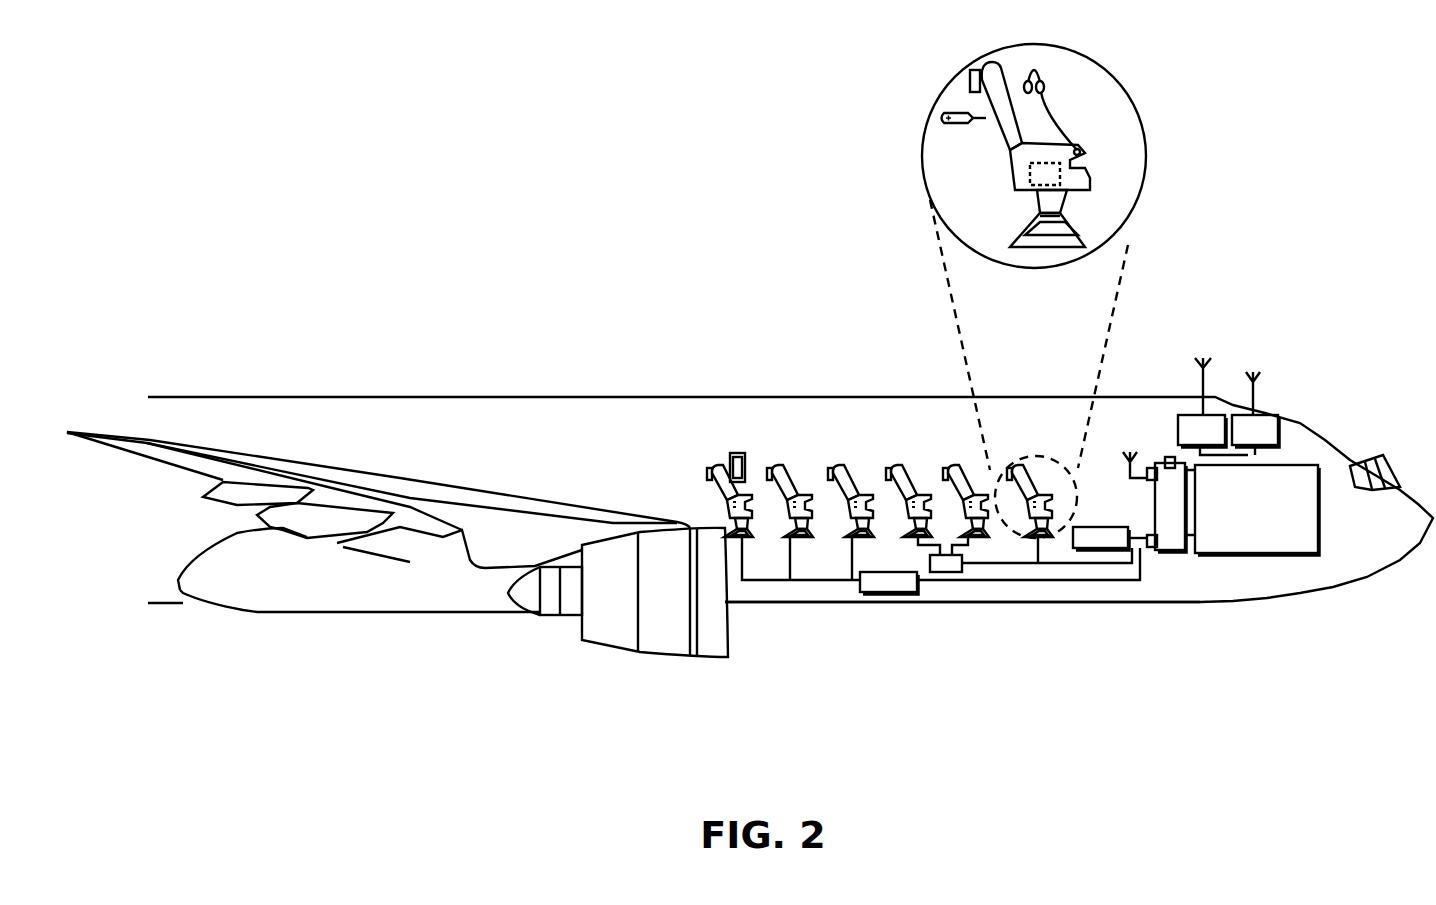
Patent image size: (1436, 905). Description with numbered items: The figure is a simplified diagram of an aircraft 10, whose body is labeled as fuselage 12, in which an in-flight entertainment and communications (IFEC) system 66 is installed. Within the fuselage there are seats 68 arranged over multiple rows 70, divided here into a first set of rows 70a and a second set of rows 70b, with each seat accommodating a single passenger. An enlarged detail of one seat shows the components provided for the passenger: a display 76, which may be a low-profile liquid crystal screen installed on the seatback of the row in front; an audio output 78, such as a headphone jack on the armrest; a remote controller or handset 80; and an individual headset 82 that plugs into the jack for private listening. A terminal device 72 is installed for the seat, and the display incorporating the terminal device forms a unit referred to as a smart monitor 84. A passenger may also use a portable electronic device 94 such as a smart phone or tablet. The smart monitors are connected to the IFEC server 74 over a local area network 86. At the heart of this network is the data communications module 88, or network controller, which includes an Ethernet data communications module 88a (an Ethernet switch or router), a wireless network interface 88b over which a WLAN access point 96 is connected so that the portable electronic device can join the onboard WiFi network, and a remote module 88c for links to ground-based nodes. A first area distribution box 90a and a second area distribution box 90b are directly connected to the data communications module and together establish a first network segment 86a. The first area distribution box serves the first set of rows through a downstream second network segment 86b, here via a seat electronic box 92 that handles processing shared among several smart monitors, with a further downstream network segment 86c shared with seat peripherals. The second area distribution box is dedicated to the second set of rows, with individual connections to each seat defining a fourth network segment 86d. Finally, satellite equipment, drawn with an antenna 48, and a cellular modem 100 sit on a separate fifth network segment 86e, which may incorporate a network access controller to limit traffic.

The aircraft 10 is at (475, 470).
The fuselage 12 is at (463, 397).
The satellite antenna 48 is at (1210, 412).
The IFEC system 66 is at (1330, 407).
The seat 68 is at (1022, 178).
The rows 70 is at (782, 413).
The first set of rows 70a is at (1053, 458).
The second set of rows 70b is at (698, 458).
The terminal device 72 is at (1078, 197).
The IFEC server 74 is at (1320, 530).
The display 76 is at (968, 82).
The audio output 78 is at (1082, 150).
The handset 80 is at (958, 124).
The headset 82 is at (1046, 87).
The smart monitor 84 is at (963, 73).
The local area network 86 is at (765, 602).
The first network segment 86a is at (1139, 583).
The second network segment 86b is at (1068, 568).
The further downstream network segment 86c is at (945, 532).
The fourth network segment 86d is at (816, 582).
The fifth network segment 86e is at (1248, 455).
The data communications module 88 is at (1155, 497).
The Ethernet data communications module 88a is at (1147, 538).
The wireless network interface 88b is at (1150, 468).
The remote module 88c is at (1175, 457).
The first area distribution box 90a is at (1122, 550).
The second area distribution box 90b is at (888, 593).
The seat electronic box 92 is at (947, 573).
The portable electronic device 94 is at (738, 455).
The WLAN access point 96 is at (1130, 452).
The cellular modem 100 is at (1270, 415).